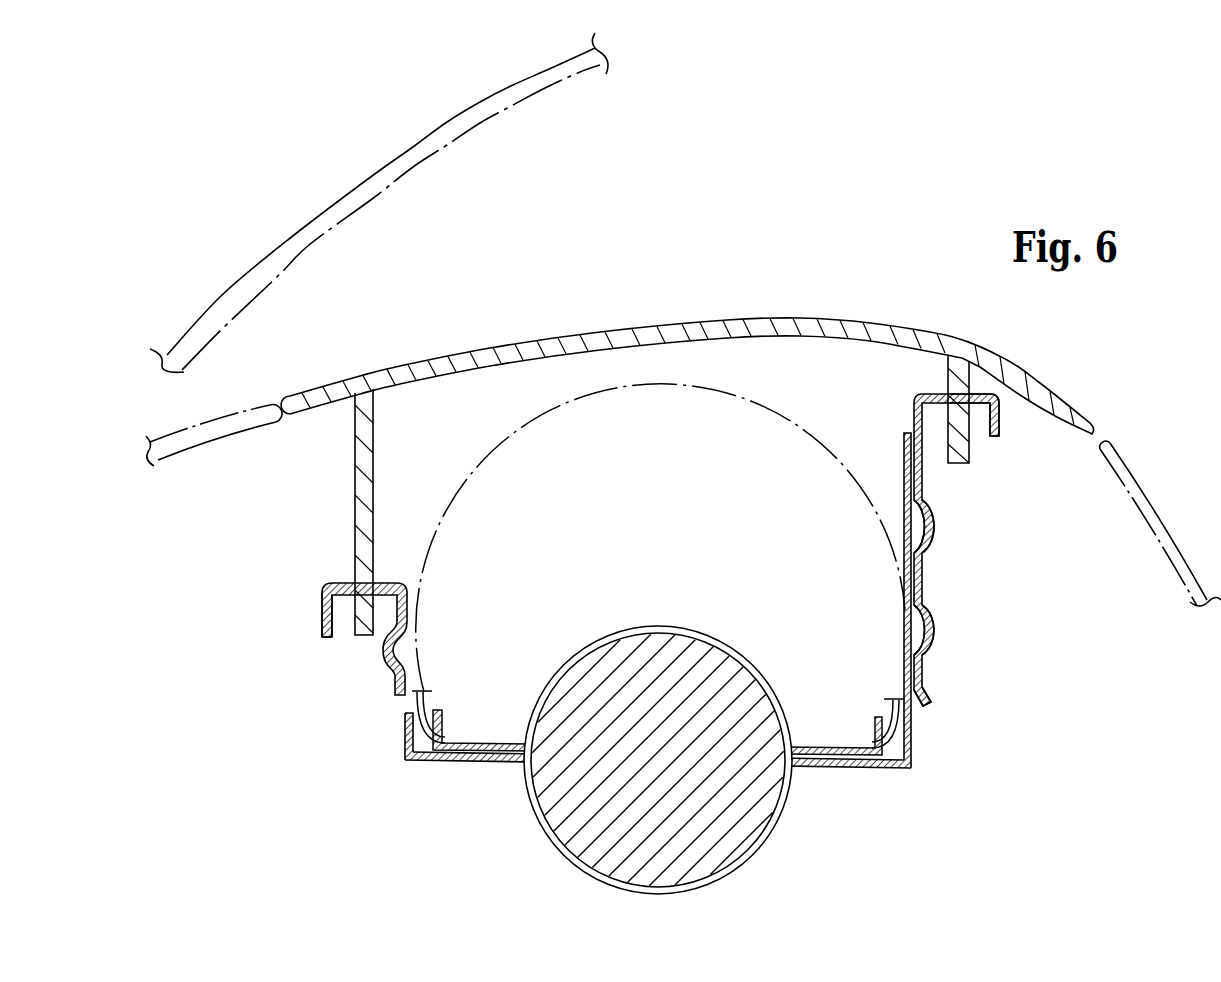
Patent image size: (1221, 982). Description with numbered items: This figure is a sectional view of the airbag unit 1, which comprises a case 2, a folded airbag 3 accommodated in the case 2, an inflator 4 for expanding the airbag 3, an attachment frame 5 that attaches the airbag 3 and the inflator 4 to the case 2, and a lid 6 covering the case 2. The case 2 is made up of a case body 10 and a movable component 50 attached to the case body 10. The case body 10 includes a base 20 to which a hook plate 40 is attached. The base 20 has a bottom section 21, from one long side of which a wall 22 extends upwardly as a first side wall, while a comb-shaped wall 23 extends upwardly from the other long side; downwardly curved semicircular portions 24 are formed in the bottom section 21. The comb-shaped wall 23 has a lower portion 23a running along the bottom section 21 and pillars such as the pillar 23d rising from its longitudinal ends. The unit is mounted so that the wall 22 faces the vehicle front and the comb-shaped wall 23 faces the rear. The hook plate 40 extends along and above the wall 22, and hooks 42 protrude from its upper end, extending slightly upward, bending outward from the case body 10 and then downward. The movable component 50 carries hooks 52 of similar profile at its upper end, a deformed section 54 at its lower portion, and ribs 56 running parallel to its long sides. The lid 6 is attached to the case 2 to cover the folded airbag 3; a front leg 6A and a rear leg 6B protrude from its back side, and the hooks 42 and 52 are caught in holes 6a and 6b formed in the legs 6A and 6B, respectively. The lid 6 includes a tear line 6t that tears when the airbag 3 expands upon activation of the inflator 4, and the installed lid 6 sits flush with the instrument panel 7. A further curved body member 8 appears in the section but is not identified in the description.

The airbag unit 1 is at (877, 230).
The case 2 is at (1126, 663).
The airbag 3 is at (490, 432).
The inflator 4 is at (672, 761).
The attachment frame 5 is at (483, 724).
The lid 6 is at (740, 322).
The leg 6A is at (353, 458).
The hole 6a is at (350, 563).
The leg 6B is at (970, 455).
The hole 6b is at (971, 422).
The tear line 6t is at (683, 347).
The instrument panel 7 is at (1160, 487).
The roof panel 8 is at (398, 172).
The case body 10 is at (951, 764).
The base 20 is at (472, 776).
The bottom section 21 is at (430, 765).
The wall 22 is at (405, 735).
The comb-shaped wall 23 is at (915, 768).
The lower portion 23a is at (913, 730).
The pillar 23d is at (903, 440).
The semicircular portion 24 is at (735, 870).
The hook plate 40 is at (377, 686).
The hook 42 is at (320, 628).
The movable component 50 is at (950, 587).
The hook 52 is at (999, 420).
The deformed section 54 is at (928, 692).
The rib 56 is at (933, 527).